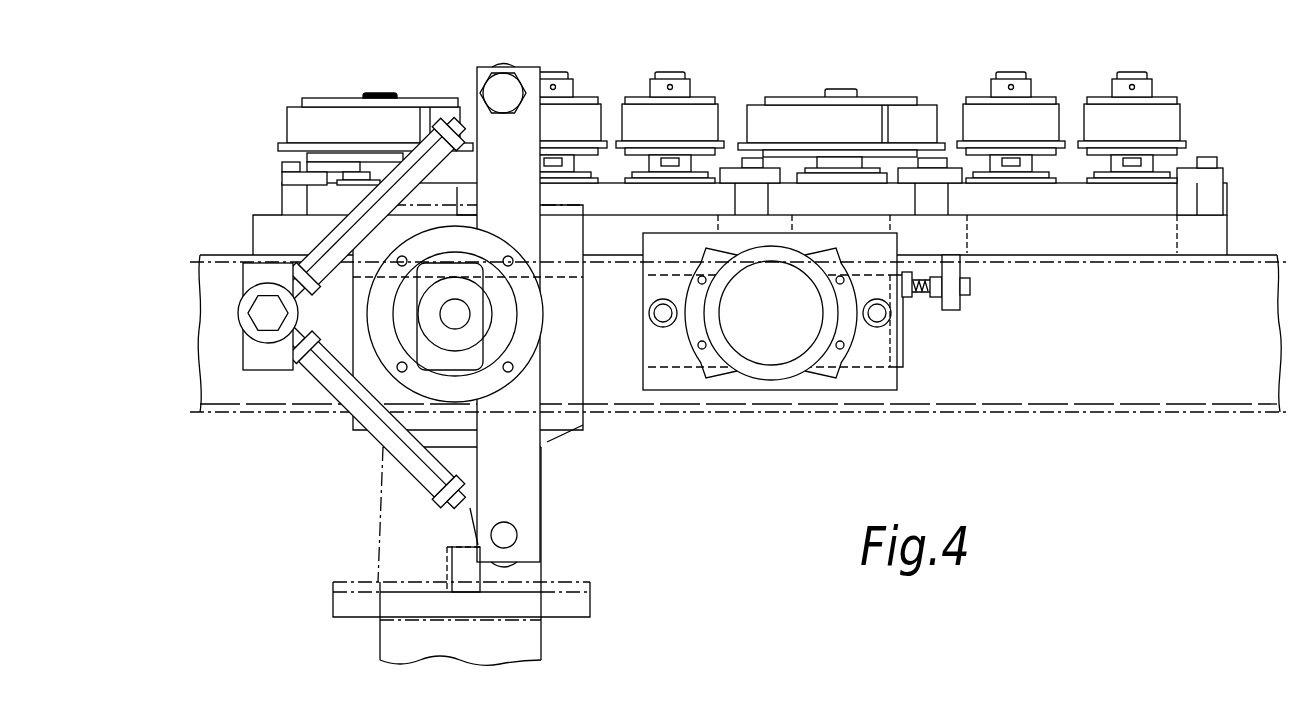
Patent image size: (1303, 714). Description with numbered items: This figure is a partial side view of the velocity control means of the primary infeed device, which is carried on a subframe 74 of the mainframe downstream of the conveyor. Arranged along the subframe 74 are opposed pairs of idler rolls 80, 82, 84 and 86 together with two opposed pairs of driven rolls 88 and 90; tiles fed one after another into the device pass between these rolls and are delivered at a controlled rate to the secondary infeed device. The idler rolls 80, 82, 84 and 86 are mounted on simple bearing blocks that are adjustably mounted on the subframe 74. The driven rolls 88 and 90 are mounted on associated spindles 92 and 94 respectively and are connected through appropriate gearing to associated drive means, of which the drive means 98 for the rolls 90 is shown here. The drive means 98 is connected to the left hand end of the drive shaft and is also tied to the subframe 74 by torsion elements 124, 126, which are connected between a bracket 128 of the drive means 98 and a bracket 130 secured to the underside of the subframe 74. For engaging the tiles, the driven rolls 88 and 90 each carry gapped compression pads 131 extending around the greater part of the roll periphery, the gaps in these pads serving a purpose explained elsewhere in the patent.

The subframe 74 is at (1183, 200).
The idler roll 80 is at (1162, 112).
The idler roll 82 is at (1050, 115).
The idler roll 84 is at (700, 112).
The idler roll 86 is at (578, 113).
The driven roll 88 is at (813, 97).
The driven roll 90 is at (300, 135).
The spindle 92 is at (848, 88).
The spindle 94 is at (380, 92).
The drive means 98 is at (343, 455).
The torsion element 124 is at (337, 243).
The torsion element 126 is at (340, 383).
The bracket 128 is at (532, 521).
The bracket 130 is at (243, 273).
The gapped compression pad 131 is at (400, 117).